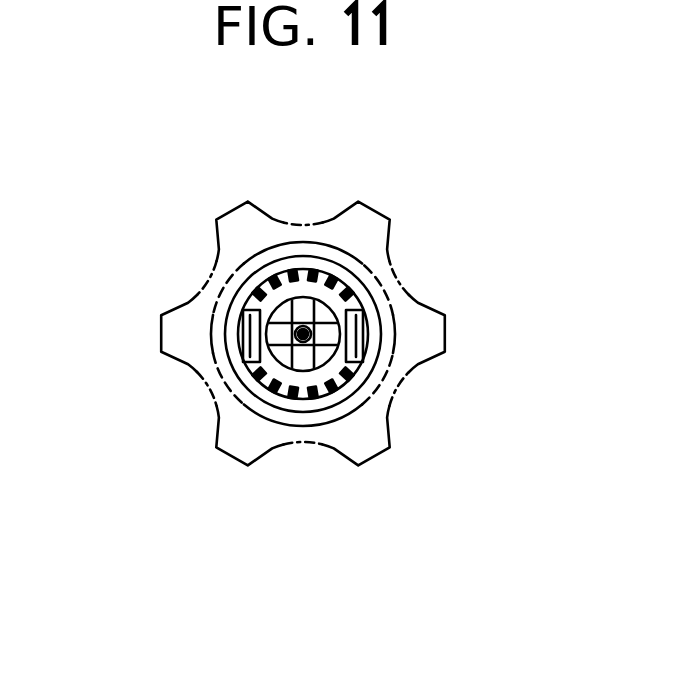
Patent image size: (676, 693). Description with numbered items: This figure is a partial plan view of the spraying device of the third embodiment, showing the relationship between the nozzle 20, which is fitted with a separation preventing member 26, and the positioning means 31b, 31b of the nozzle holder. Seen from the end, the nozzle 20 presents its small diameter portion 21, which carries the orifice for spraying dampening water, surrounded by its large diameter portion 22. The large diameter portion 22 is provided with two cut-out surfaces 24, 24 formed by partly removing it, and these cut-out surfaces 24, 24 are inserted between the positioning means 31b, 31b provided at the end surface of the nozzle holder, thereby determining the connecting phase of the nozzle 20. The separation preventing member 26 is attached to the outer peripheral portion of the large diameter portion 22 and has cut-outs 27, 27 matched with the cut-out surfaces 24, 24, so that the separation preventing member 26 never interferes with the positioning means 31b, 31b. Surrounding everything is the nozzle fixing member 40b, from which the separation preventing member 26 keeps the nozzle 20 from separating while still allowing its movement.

The nozzle 20 is at (387, 290).
The small diameter portion 21 is at (293, 299).
The large diameter portion 22 is at (323, 318).
The cut-out surfaces 24 is at (245, 328).
The separation preventing member 26 is at (216, 278).
The cut-outs 27 is at (246, 314).
The positioning means 31b is at (207, 377).
The nozzle fixing member 40b is at (373, 427).